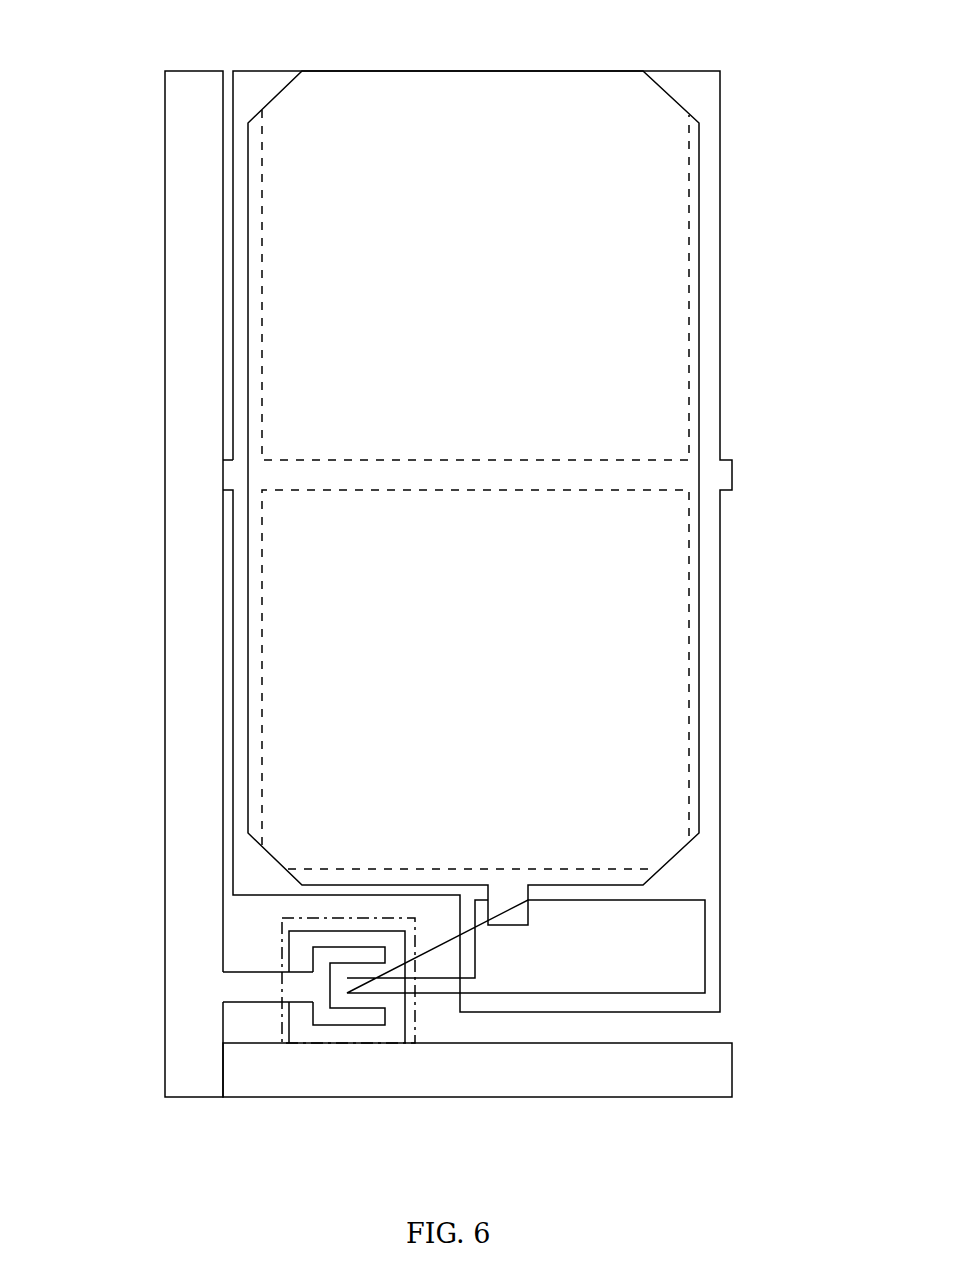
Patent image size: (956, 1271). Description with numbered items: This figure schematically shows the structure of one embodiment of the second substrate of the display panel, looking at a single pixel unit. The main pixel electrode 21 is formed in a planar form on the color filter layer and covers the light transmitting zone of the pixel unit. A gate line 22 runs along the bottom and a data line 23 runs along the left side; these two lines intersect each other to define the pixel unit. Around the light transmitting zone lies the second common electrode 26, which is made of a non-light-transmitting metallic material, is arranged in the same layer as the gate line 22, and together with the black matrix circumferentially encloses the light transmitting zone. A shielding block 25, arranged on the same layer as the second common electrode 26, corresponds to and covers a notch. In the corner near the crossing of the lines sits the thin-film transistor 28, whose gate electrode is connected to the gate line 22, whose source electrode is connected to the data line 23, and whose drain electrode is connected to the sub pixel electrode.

The main pixel electrode 21 is at (429, 92).
The gate line 22 is at (550, 1067).
The data line 23 is at (182, 493).
The shielding block 25 is at (264, 85).
The second common electrode 26 is at (711, 285).
The thin-film transistor 28 is at (356, 1045).